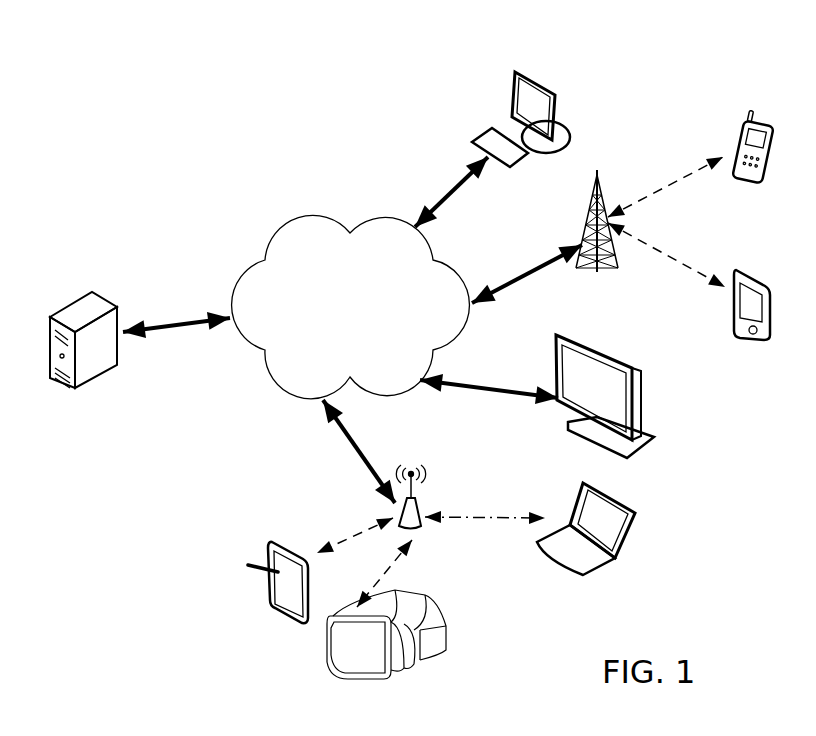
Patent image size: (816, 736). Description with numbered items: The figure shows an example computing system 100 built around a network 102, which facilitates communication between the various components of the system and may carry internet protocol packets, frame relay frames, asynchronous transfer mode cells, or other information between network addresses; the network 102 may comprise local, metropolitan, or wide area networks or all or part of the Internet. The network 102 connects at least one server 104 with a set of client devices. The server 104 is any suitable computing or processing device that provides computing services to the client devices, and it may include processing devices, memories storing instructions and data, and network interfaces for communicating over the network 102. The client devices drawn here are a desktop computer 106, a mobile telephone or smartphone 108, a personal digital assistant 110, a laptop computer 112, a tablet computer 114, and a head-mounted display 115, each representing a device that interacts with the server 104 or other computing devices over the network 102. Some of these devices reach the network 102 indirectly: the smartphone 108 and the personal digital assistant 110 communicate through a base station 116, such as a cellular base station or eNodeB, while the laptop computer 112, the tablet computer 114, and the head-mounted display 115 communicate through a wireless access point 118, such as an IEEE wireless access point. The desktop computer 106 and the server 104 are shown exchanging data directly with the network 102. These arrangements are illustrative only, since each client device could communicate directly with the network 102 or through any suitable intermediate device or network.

The computing system 100 is at (198, 97).
The network 102 is at (275, 232).
The server 104 is at (62, 307).
The desktop computer 106 is at (513, 77).
The mobile telephone or smartphone 108 is at (767, 130).
The personal digital assistant (PDA) 110 is at (767, 280).
The laptop computer 112 is at (610, 563).
The tablet computer 114 is at (267, 547).
The head-mounted display (HMD) 115 is at (658, 440).
The base station 116 is at (615, 258).
The wireless access point 118 is at (420, 503).